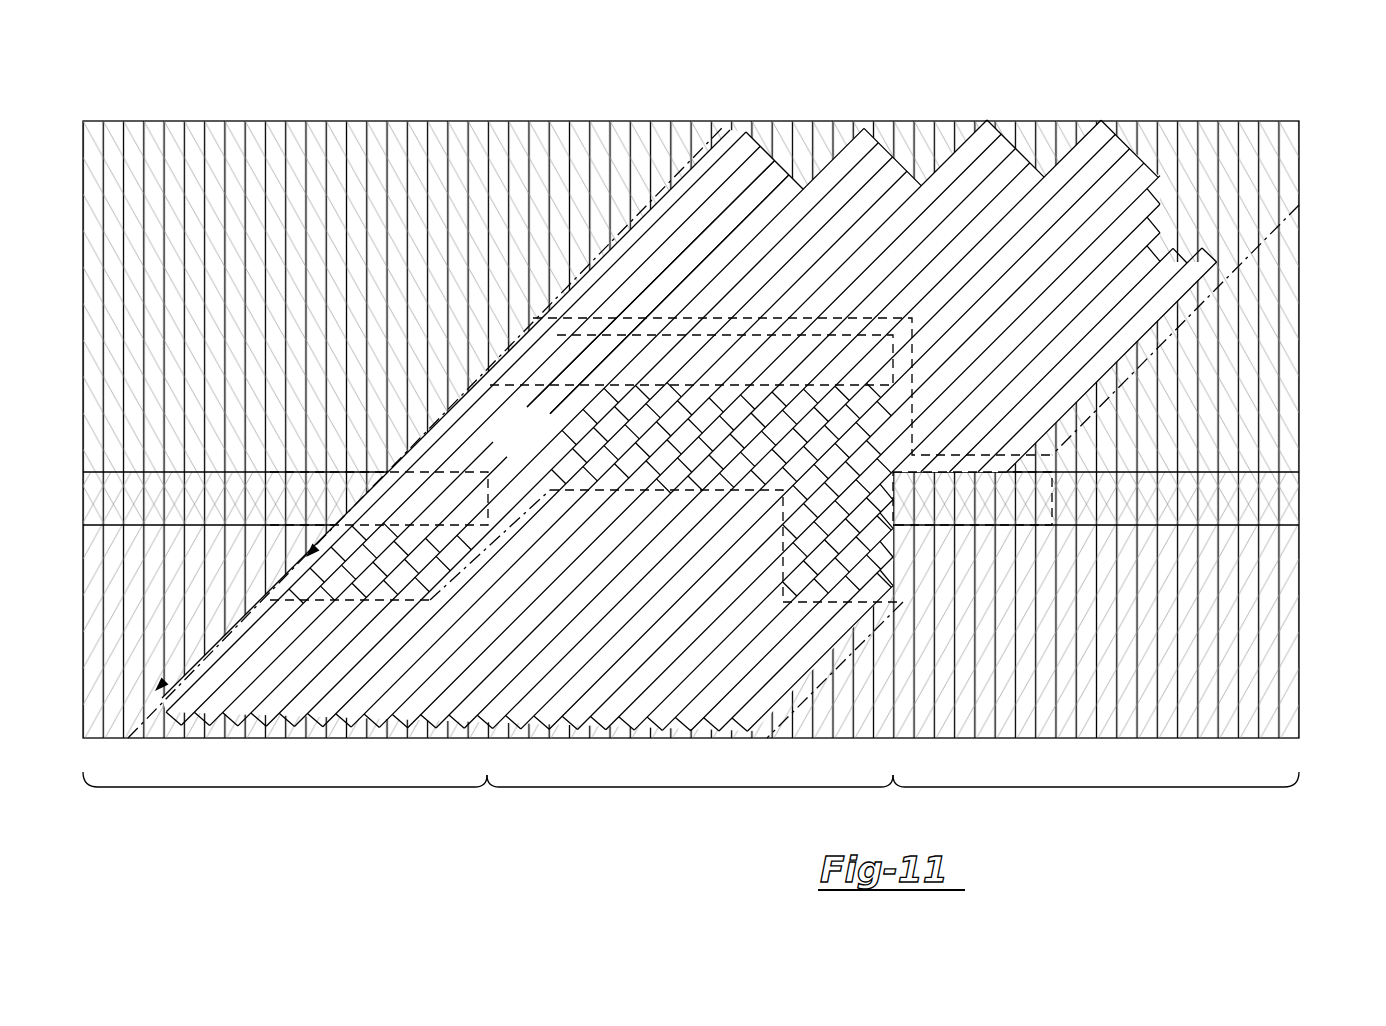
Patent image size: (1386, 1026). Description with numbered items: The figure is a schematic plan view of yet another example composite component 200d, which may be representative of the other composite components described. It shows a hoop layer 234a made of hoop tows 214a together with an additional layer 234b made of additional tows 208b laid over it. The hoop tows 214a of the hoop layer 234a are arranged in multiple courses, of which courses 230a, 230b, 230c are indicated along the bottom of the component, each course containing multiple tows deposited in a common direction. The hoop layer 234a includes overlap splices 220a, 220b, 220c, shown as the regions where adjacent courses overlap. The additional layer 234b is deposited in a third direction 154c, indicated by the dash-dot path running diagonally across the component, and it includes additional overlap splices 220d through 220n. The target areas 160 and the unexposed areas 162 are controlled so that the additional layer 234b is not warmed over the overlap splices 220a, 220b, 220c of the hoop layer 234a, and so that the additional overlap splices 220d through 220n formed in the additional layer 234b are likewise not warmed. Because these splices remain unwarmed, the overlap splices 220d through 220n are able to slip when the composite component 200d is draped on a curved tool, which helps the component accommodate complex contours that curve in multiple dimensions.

The composite component 200d is at (370, 72).
The hoop tows 214a is at (665, 429).
The hoop layer 234a is at (83, 222).
The overlap splice 220a is at (83, 474).
The target areas 160 is at (935, 251).
The additional layer 234b is at (1060, 156).
The additional tows 208b is at (846, 425).
The unexposed areas 162 is at (535, 443).
The overlap splice 220b is at (488, 345).
The third direction 154c is at (676, 180).
The additional overlap splice 220d is at (337, 515).
The additional overlap splice 220n is at (912, 553).
The overlap splice 220c is at (1299, 496).
The course 230a is at (285, 790).
The course 230b is at (690, 790).
The course 230c is at (1100, 790).